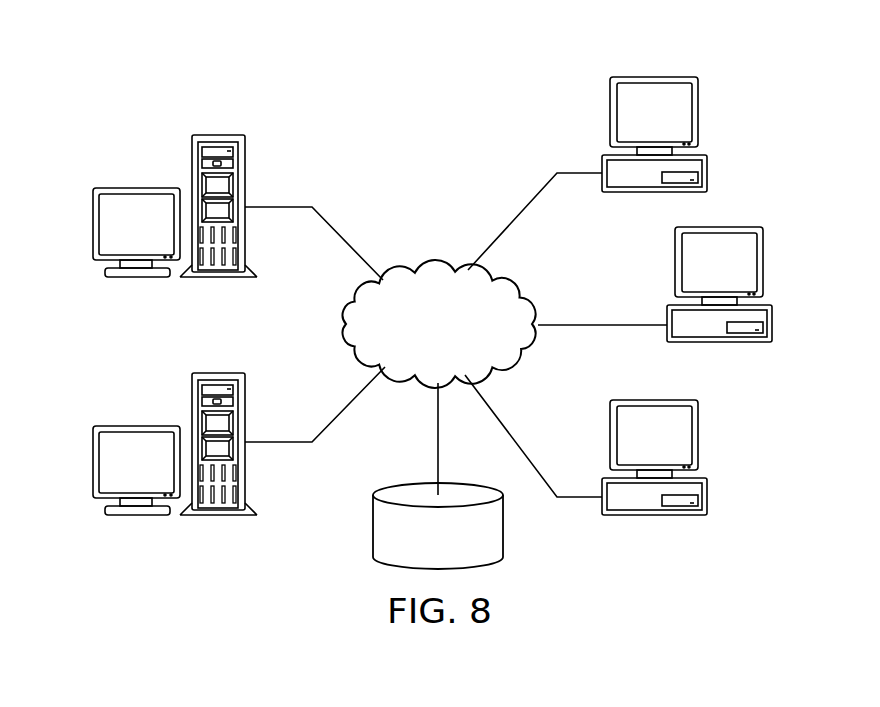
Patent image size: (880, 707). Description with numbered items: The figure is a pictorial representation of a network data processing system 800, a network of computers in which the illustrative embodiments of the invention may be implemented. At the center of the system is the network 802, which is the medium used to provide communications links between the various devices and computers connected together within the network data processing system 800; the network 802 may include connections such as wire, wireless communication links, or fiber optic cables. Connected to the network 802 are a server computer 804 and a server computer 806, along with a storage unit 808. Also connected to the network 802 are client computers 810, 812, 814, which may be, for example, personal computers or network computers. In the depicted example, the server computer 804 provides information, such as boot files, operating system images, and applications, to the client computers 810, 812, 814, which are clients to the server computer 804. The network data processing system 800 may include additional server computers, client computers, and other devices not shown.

The network data processing system 800 is at (348, 73).
The network 802 is at (432, 267).
The server computer 804 is at (93, 230).
The server computer 806 is at (93, 460).
The storage unit 808 is at (373, 527).
The client computer 810 is at (708, 165).
The client computer 812 is at (773, 335).
The client computer 814 is at (708, 507).